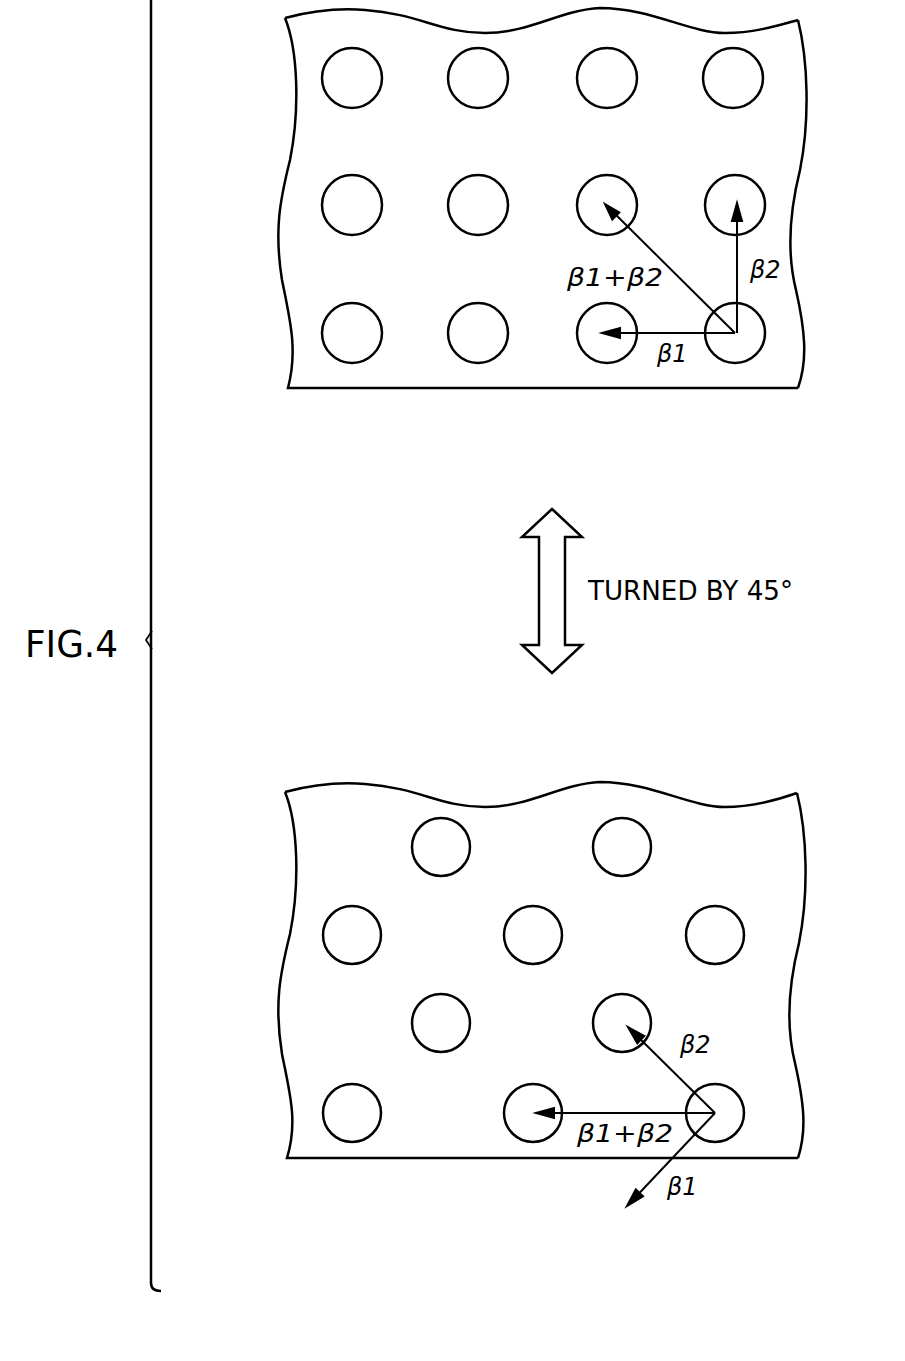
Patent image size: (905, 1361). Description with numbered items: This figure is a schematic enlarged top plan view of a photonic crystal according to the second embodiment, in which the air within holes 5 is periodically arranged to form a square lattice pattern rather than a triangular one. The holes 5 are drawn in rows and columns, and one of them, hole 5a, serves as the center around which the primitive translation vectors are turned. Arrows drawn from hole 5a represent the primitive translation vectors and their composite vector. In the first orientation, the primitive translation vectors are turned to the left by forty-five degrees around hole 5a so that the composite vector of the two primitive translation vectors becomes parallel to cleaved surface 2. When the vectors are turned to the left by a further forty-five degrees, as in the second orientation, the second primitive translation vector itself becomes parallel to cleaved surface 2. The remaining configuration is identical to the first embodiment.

The cleaved surface 2 is at (660, 390).
The holes 5 is at (352, 347).
The hole 5a is at (745, 343).